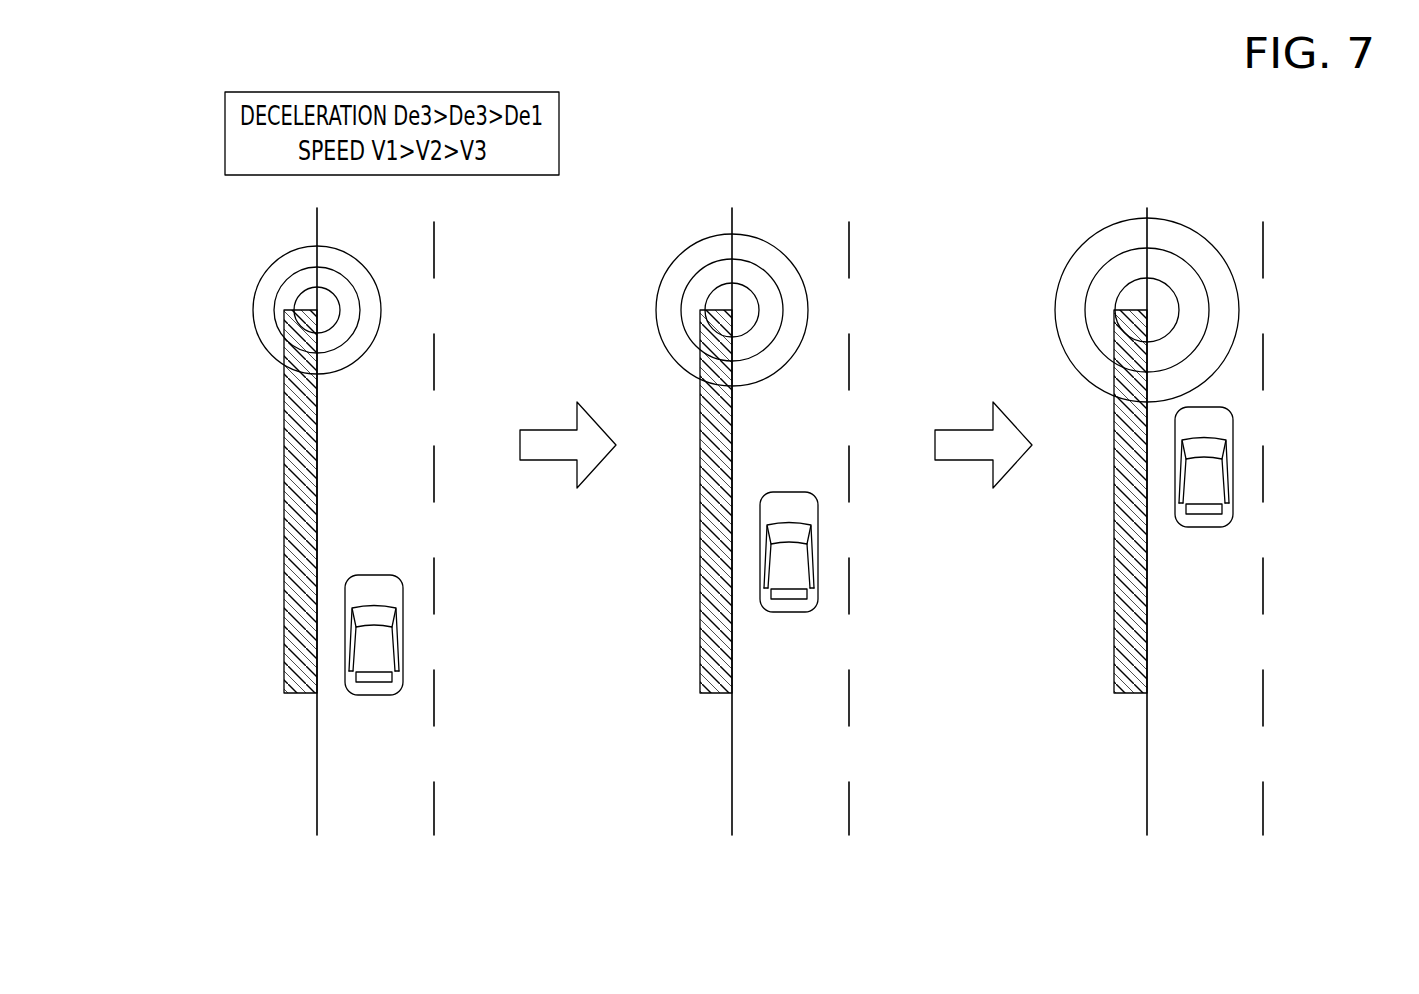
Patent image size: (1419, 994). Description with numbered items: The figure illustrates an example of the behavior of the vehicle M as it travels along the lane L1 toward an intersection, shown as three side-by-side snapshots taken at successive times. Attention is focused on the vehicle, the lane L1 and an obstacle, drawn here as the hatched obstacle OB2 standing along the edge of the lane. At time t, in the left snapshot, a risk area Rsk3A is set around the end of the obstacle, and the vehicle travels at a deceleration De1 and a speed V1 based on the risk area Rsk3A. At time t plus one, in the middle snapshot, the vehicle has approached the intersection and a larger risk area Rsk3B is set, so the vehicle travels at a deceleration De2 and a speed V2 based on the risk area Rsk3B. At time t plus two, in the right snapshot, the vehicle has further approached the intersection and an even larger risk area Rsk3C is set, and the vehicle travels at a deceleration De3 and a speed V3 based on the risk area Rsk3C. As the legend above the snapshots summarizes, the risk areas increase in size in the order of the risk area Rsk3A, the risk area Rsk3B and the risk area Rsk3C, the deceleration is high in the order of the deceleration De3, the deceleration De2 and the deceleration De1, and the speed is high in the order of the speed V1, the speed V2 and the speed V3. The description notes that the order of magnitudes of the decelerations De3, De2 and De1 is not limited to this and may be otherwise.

The risk area Rsk3A is at (253, 308).
The risk area Rsk3B is at (656, 308).
The risk area Rsk3C is at (1055, 308).
The obstacle OB2 is at (284, 490).
The lane L1 is at (390, 835).
The deceleration De1 is at (487, 669).
The deceleration De2 is at (903, 586).
The deceleration De3 is at (1316, 501).
The speed V1 is at (481, 703).
The speed V2 is at (896, 621).
The speed V3 is at (1311, 536).